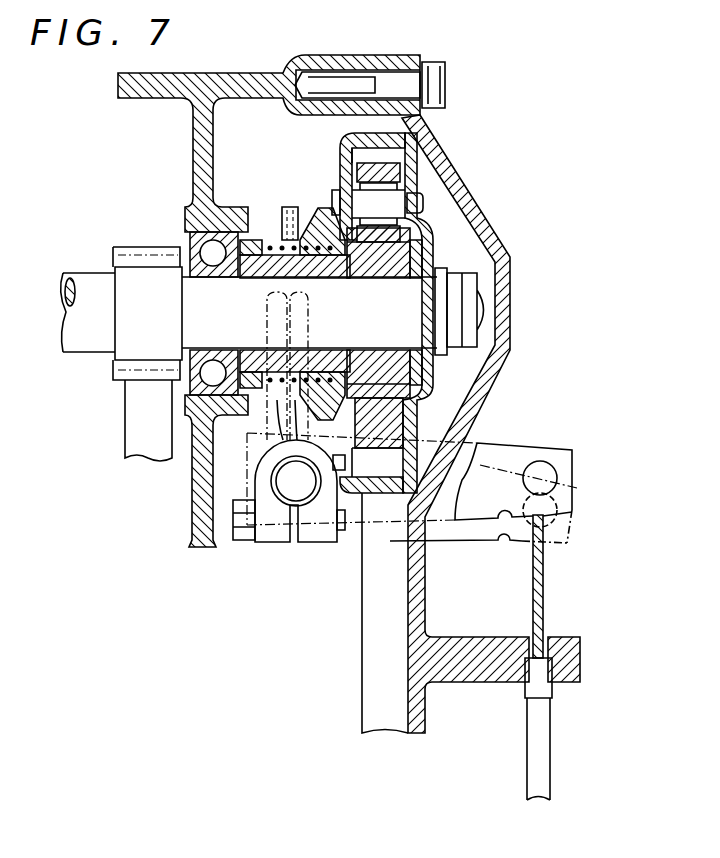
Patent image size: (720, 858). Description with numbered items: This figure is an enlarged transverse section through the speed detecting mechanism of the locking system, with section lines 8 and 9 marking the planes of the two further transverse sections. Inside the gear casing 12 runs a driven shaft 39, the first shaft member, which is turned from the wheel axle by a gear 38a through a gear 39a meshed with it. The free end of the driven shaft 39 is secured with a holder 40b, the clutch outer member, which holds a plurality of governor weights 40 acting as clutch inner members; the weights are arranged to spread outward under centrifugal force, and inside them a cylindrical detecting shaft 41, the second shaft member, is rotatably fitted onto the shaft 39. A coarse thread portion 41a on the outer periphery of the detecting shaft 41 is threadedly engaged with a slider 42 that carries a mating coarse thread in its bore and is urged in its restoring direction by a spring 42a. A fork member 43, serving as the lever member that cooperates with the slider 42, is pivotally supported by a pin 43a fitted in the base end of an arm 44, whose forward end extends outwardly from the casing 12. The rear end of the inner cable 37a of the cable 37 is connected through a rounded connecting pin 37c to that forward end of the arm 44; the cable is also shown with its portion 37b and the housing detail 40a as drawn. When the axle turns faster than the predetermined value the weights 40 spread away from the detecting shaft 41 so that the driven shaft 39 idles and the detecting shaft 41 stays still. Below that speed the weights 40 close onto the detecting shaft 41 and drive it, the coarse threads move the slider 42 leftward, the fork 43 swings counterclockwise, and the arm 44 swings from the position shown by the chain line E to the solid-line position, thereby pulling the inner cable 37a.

The section line 8- 8 is at (338, 52).
The section line 9- 9 is at (237, 60).
The gear casing 12 is at (474, 184).
The cable 37 is at (533, 768).
The inner cable 37a is at (545, 598).
The push rod lower portion 37b is at (545, 738).
The rounded connecting pin 37c is at (553, 476).
The gear 38a is at (150, 440).
The driven shaft 39 is at (82, 340).
The gear 39a is at (118, 247).
The governor weights 40 is at (383, 175).
The cam follower housing wall 40a is at (462, 213).
The holder 40b is at (440, 257).
The detecting shaft 41 is at (421, 366).
The coarse thread portion 41a is at (282, 248).
The slider 42 is at (316, 228).
The spring 42a is at (205, 229).
The fork member 43 is at (265, 318).
The pin 43a is at (288, 482).
The arm 44 is at (512, 455).
The chain line position E is at (567, 542).